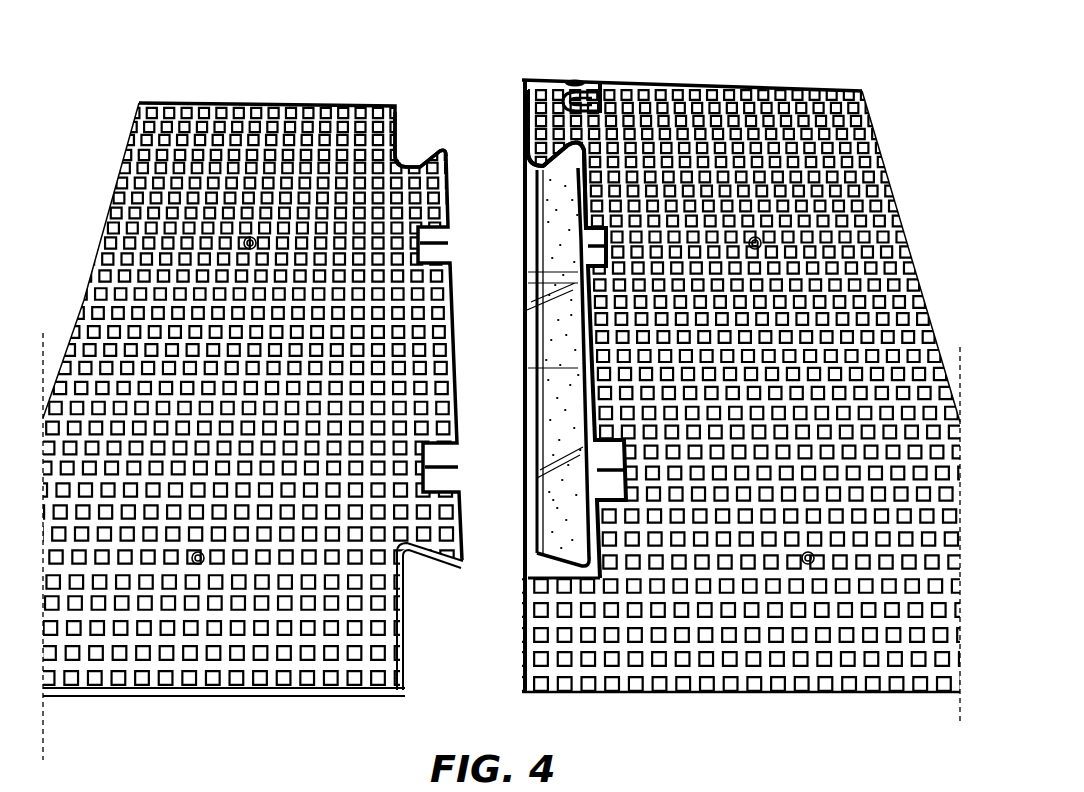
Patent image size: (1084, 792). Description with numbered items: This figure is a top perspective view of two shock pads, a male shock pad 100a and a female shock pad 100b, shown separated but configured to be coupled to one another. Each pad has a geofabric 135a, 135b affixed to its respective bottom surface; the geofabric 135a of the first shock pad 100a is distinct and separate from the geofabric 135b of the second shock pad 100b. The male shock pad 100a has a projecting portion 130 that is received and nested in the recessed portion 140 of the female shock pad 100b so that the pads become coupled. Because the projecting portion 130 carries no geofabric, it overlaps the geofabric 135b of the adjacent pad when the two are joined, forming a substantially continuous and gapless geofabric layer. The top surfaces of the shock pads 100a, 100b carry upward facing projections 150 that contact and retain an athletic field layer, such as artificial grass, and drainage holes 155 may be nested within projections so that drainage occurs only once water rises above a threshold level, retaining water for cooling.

The shock pad 100a is at (291, 98).
The shock pad 100b is at (685, 71).
The geofabric 135a is at (400, 152).
The geofabric 135b is at (557, 258).
The recessed portion 140 is at (560, 251).
The projecting portion 130 is at (438, 572).
The upward facing projections 150 is at (286, 661).
The drainage holes 155 is at (198, 565).